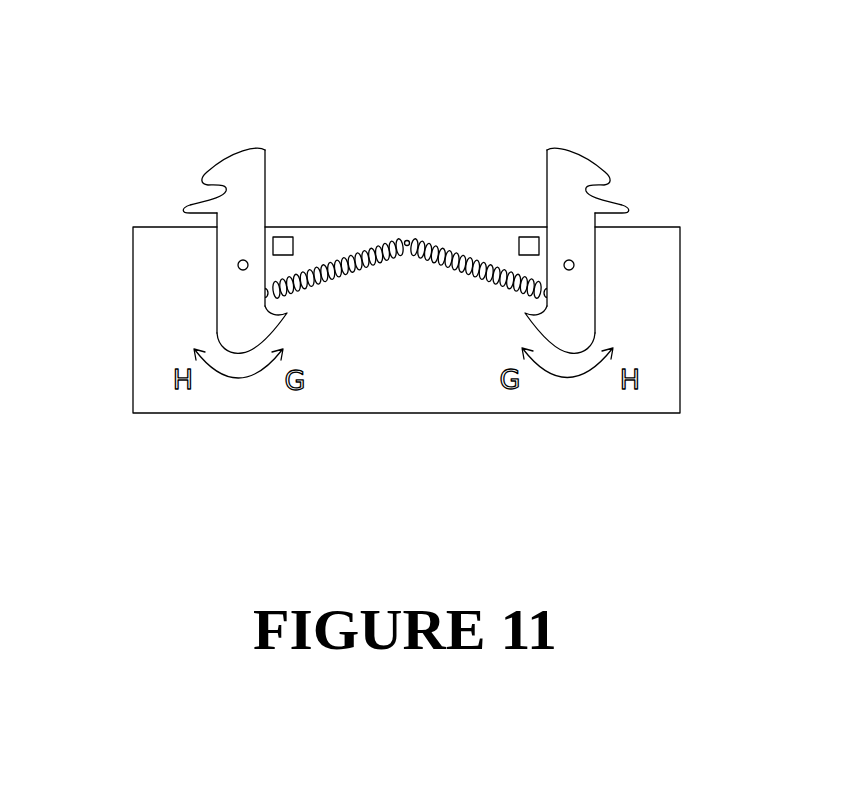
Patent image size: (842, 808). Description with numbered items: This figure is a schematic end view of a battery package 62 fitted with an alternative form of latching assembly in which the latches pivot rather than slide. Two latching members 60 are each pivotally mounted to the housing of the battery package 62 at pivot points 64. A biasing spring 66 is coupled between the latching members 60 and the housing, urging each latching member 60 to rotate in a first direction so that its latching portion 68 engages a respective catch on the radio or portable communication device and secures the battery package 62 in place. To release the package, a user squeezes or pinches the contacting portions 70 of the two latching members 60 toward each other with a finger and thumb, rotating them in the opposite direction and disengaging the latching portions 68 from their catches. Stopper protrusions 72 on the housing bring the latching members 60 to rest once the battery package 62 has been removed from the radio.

The latching member 60 is at (260, 150).
The battery package 62 is at (133, 418).
The pivot point 64 is at (238, 265).
The biasing spring 66 is at (330, 293).
The latching portion 68 is at (260, 328).
The contacting portion 70 is at (203, 174).
The stopper protrusion 72 is at (293, 243).